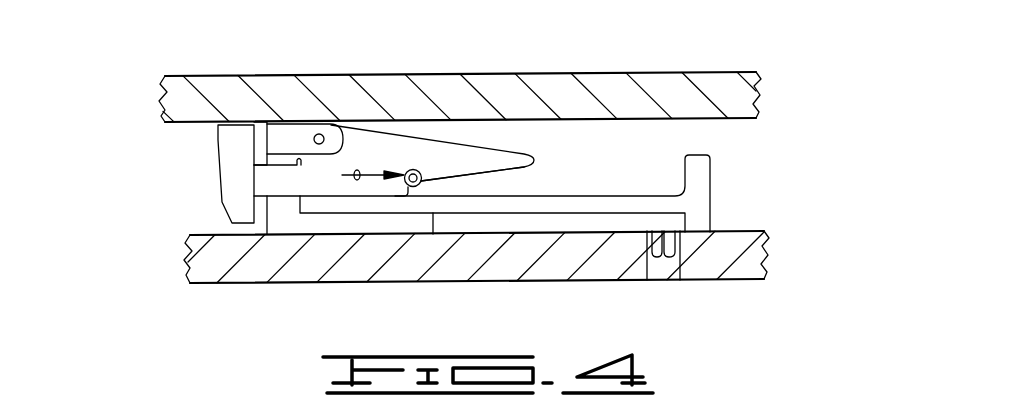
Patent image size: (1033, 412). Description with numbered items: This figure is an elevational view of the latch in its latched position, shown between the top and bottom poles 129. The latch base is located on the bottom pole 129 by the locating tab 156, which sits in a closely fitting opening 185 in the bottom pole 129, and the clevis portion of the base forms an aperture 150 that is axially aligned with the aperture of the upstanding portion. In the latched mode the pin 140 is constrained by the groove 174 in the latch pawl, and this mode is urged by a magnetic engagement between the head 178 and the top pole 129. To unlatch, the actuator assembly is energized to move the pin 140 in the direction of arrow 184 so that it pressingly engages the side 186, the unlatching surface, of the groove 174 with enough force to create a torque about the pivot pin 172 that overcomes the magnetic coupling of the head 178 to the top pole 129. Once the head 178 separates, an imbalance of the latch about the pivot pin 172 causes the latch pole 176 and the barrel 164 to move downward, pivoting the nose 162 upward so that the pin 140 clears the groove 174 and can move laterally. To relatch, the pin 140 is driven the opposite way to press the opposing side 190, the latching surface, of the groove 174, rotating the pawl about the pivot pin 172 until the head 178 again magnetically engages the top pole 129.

The pole 129 is at (760, 95).
The pin 140 is at (408, 188).
The aperture 150 is at (710, 180).
The locating tab 156 is at (664, 257).
The nose 162 is at (497, 149).
The barrel 164 is at (222, 200).
The pivot pin 172 is at (318, 134).
The groove 174 is at (416, 142).
The latch pole 176 is at (256, 180).
The head 178 is at (252, 122).
The arrow 184 is at (357, 170).
The opening 185 is at (683, 243).
The side of the groove 186 is at (423, 174).
The opposing side of the groove 190 is at (405, 185).